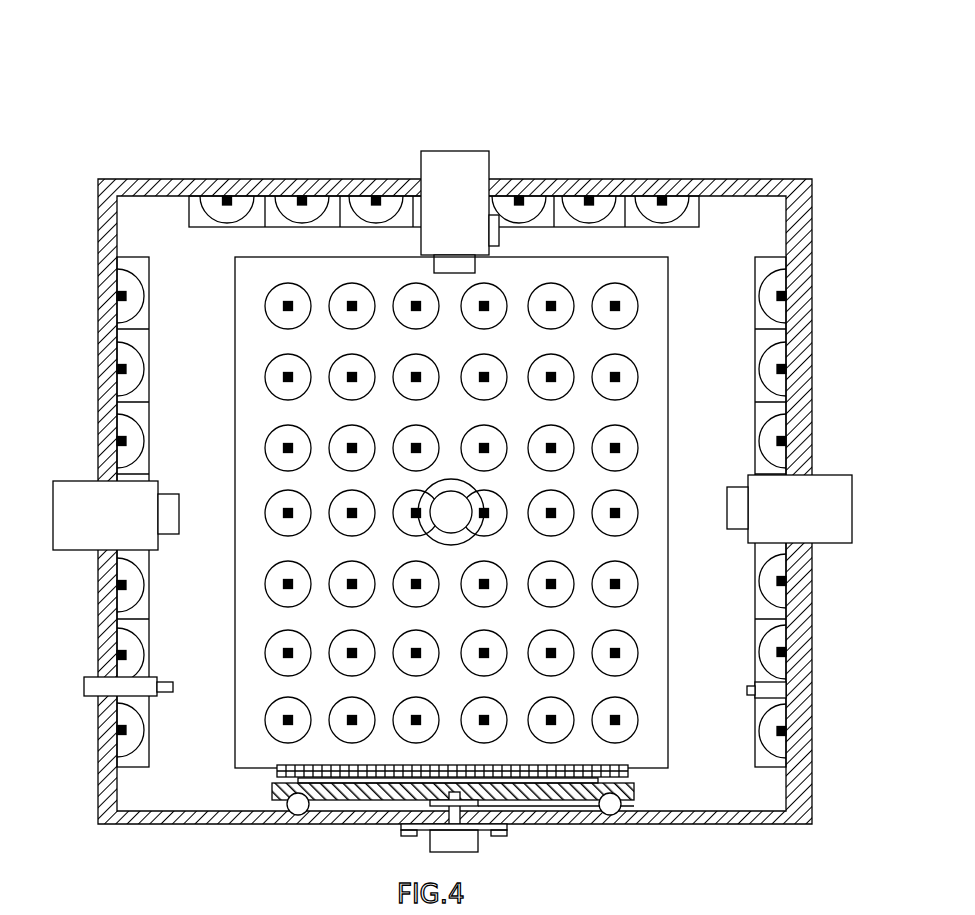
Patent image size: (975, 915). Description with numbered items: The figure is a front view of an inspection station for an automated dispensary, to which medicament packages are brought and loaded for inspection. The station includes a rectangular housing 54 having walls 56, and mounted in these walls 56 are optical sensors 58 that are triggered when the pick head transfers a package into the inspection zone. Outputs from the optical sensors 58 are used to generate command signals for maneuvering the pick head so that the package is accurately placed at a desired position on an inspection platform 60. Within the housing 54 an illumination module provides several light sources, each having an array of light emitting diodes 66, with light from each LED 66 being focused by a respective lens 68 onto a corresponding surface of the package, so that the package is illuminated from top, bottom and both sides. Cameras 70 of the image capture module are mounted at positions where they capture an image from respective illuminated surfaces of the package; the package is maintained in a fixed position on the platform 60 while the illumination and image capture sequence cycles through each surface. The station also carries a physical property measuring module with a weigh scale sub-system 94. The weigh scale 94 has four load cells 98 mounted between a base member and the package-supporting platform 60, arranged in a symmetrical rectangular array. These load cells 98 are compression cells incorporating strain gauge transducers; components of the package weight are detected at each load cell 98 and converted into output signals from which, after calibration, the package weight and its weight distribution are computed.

The rectangular housing 54 is at (471, 451).
The walls 56 is at (810, 313).
The optical sensors 58 is at (134, 705).
The inspection platform 60 is at (607, 773).
The light emitting diodes 66 is at (618, 448).
The lens 68 is at (618, 650).
The cameras 70 is at (450, 508).
The weigh scale sub-system 94 is at (268, 782).
The load cells 98 is at (325, 780).